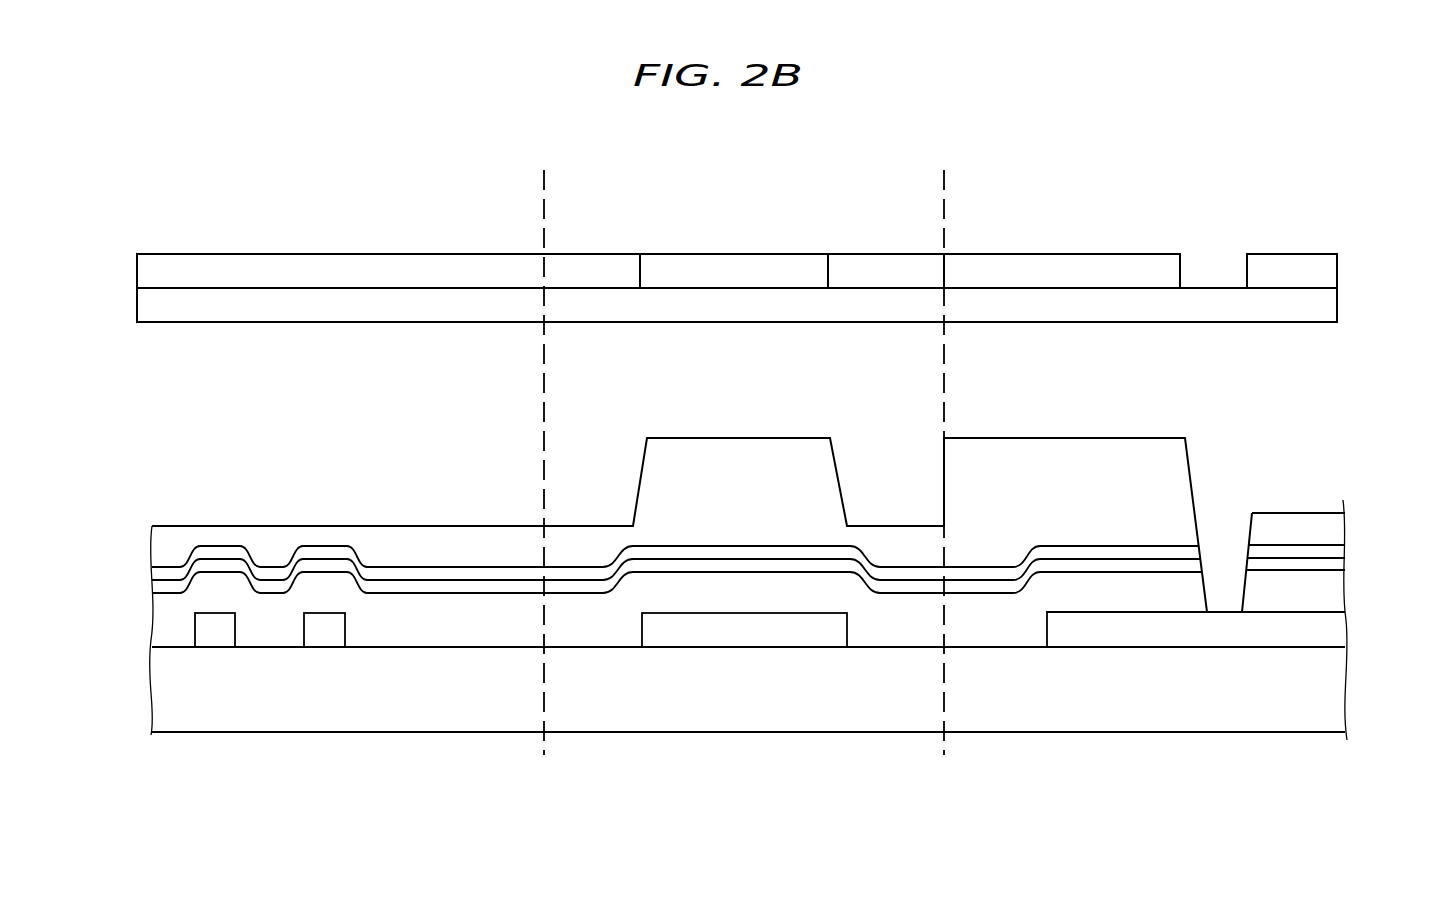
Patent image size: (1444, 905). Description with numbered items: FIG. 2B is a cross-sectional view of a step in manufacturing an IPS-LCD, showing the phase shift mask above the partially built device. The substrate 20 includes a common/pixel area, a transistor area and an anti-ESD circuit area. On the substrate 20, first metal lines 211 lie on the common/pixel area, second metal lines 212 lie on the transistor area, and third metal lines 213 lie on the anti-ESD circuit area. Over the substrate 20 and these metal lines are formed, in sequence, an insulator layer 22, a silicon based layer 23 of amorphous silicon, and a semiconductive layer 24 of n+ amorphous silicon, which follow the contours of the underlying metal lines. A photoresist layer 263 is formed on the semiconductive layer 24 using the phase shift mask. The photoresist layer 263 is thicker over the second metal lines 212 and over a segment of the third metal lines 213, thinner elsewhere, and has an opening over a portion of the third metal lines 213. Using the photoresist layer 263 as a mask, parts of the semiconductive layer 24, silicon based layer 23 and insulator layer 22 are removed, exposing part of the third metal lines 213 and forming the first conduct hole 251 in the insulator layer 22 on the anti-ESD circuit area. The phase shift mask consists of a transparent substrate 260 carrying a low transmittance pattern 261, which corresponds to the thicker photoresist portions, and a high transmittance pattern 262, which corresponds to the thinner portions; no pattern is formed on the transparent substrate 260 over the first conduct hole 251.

The substrate 20 is at (260, 702).
The insulator layer 22 is at (312, 609).
The silicon based layer 23 is at (155, 588).
The semiconductive layer 24 is at (157, 577).
The first metal lines 211 is at (198, 643).
The second metal lines 212 is at (726, 641).
The third metal lines 213 is at (1191, 642).
The first conduct hole 251 is at (1218, 538).
The transparent substrate 260 is at (766, 318).
The low transmittance pattern 261 is at (714, 286).
The high transmittance pattern 262 is at (303, 286).
The photoresist layer 263 is at (446, 561).